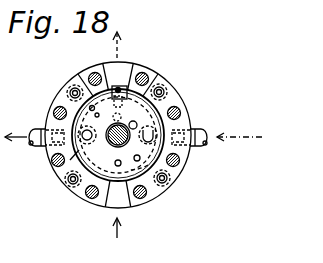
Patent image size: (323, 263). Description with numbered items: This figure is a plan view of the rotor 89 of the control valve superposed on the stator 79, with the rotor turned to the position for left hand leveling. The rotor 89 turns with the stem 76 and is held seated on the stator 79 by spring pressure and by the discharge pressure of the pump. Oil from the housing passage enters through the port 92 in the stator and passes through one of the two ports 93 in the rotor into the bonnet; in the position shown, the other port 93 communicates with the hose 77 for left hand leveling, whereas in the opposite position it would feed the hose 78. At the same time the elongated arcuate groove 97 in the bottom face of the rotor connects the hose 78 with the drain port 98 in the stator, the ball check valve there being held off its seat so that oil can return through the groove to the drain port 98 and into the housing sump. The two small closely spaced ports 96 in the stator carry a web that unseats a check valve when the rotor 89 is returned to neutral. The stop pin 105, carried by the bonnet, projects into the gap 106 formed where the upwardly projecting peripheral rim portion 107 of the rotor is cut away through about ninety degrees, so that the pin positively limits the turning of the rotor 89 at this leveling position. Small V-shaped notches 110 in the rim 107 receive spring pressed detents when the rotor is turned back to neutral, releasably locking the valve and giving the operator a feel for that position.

The stem 76 is at (166, 84).
The gap 106 is at (157, 113).
The upwardly projecting peripheral rim portion 107 is at (72, 117).
The stop pin 105 is at (119, 88).
The elongated arcuate groove 97 is at (134, 122).
The drain port 98 is at (82, 75).
The hose 78 is at (204, 128).
The hose 77 is at (33, 147).
The small closely spaced ports 96 is at (140, 160).
The stator 79 is at (177, 167).
The V-shaped notches 110 is at (148, 170).
The ports 93 is at (128, 208).
The port 92 is at (106, 208).
The rotor 89 is at (76, 188).